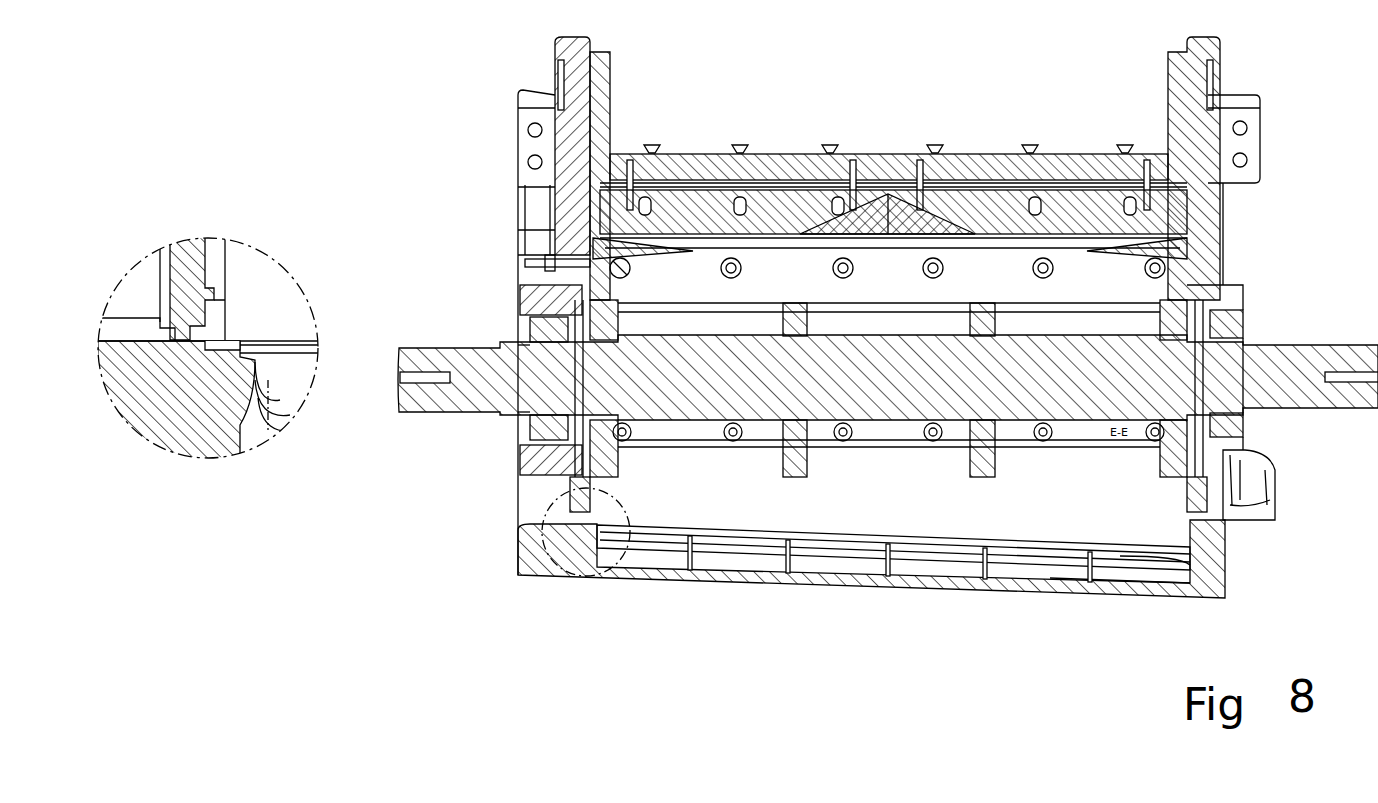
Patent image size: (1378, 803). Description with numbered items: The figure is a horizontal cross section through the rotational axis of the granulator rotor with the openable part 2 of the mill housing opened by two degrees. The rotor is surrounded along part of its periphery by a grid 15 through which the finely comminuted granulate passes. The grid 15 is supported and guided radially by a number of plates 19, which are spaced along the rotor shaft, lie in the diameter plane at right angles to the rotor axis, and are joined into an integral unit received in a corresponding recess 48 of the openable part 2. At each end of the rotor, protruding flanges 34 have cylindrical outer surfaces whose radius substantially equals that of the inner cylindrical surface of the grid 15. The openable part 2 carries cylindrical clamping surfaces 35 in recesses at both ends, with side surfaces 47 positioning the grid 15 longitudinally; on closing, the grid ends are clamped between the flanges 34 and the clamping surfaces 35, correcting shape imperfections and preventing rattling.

The openable part 2 is at (885, 582).
The grid 15 is at (826, 540).
The plates 19 is at (710, 582).
The protruding flanges 34 is at (585, 493).
The clamping surfaces 35 is at (226, 365).
The side surfaces 47 is at (198, 360).
The recess 48 is at (1072, 598).